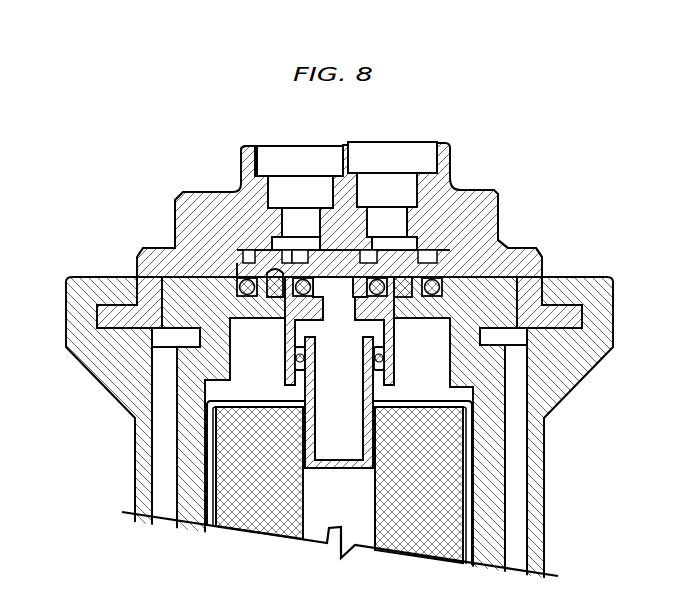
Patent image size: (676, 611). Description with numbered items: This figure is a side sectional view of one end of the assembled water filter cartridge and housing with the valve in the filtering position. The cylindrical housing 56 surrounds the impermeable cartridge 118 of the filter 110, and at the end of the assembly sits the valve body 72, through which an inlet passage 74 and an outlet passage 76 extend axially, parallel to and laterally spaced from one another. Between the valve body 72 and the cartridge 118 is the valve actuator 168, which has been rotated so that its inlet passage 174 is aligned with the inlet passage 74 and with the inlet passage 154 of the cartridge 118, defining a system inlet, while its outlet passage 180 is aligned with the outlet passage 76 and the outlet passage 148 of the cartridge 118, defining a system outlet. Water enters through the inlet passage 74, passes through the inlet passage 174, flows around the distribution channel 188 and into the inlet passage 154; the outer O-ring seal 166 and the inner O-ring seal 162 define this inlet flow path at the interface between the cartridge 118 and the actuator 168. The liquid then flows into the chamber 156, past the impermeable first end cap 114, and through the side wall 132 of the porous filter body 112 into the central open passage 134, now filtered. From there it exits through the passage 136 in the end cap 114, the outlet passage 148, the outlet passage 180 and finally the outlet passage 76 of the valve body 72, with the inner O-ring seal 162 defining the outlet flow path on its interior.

The housing 56 is at (541, 521).
The valve body 72 is at (500, 203).
The inlet passage 74 is at (410, 285).
The outlet passage 76 is at (270, 150).
The filter 110 is at (493, 506).
The filter body 112 is at (213, 502).
The first end cap 114 is at (258, 397).
The cartridge 118 is at (507, 440).
The side wall 132 is at (213, 483).
The open passage 134 is at (323, 530).
The passage 136 is at (348, 385).
The outlet passage 148 is at (342, 290).
The inlet passage 154 is at (432, 275).
The chamber 156 is at (250, 343).
The inner O-ring seal 162 is at (380, 273).
The outer O-ring seal 166 is at (247, 277).
The valve actuator 168 is at (497, 254).
The inlet passage 174 is at (423, 258).
The outlet passage 180 is at (245, 150).
The distribution channel 188 is at (270, 275).